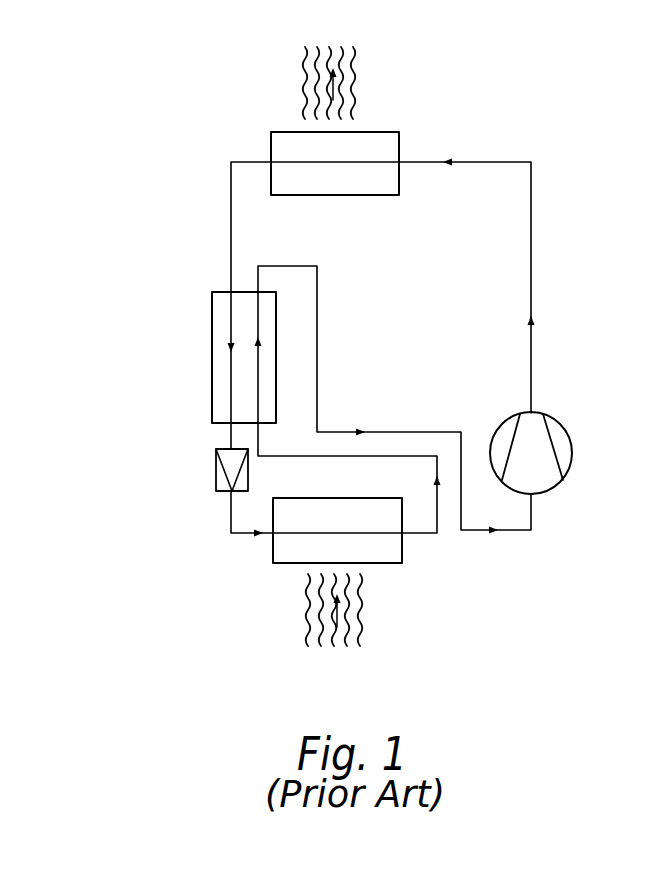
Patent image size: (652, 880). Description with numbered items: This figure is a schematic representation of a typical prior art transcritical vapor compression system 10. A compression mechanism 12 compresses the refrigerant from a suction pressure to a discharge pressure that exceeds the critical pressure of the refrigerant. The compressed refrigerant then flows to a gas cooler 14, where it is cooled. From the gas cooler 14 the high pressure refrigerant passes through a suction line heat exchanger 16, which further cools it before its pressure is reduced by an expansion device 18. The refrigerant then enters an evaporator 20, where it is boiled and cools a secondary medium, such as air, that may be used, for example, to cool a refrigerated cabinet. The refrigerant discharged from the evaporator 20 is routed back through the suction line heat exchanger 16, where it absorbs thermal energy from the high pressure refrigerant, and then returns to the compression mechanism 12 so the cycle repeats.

The transcritical vapor compression system 10 is at (157, 143).
The compression mechanism 12 is at (575, 456).
The gas cooler 14 is at (377, 131).
The suction line heat exchanger 16 is at (212, 342).
The expansion device 18 is at (216, 468).
The evaporator 20 is at (402, 545).